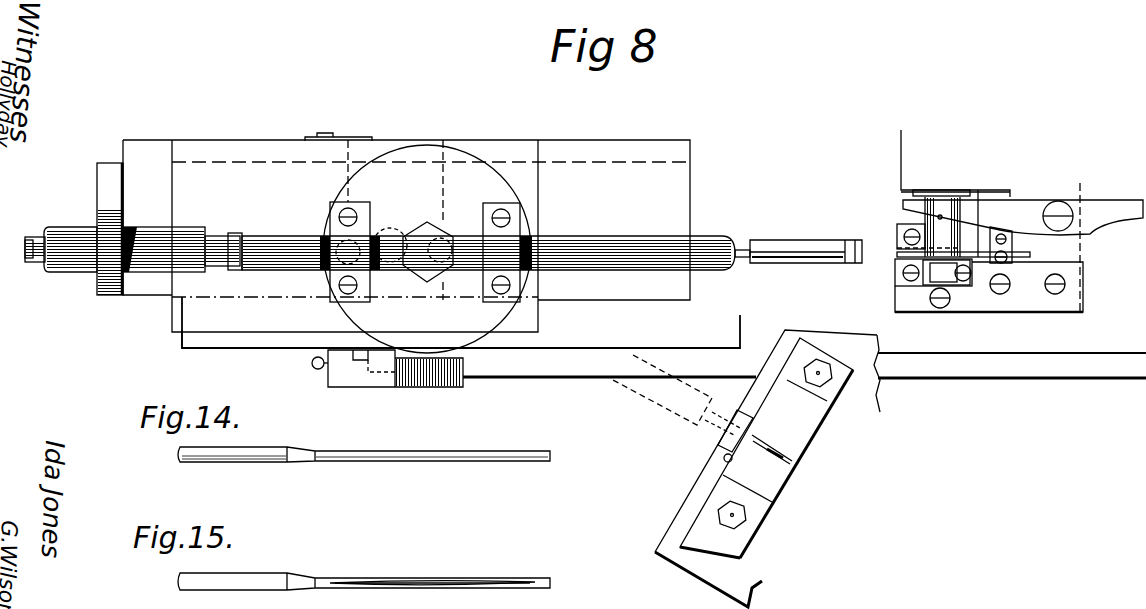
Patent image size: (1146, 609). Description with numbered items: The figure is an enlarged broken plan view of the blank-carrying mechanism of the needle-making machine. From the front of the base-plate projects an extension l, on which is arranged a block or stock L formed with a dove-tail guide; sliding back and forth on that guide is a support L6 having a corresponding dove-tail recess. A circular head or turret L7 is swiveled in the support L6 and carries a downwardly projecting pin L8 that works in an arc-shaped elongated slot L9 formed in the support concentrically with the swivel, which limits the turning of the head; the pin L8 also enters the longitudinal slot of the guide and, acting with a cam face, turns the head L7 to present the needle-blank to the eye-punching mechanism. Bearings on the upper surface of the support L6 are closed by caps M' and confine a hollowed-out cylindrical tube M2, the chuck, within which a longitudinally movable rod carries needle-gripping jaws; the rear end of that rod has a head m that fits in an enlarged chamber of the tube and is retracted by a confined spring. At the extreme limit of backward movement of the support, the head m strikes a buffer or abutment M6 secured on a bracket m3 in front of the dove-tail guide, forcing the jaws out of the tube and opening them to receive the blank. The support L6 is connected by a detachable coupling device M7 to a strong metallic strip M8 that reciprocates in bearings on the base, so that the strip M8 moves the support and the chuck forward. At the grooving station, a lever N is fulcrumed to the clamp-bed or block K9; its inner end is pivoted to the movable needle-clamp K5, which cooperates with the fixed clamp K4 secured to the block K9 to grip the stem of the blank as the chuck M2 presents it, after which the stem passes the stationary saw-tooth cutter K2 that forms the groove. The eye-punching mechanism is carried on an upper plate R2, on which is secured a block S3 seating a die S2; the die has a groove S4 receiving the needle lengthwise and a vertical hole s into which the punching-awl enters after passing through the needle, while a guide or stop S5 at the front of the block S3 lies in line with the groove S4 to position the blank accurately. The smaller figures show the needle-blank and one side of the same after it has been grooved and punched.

The block or stock L is at (406, 232).
The circular head or turret L7 is at (427, 249).
The support L6 is at (247, 308).
The extension l is at (282, 337).
The bracket m3 is at (105, 190).
The buffer or abutment M6 is at (216, 235).
The head m is at (238, 242).
The cylindrical tube M2 is at (626, 270).
The caps M' is at (428, 249).
The arc-shaped elongated slot L9 is at (411, 263).
The pin L8 is at (365, 226).
The detachable coupling device M7 is at (357, 377).
The metallic strip M8 is at (553, 372).
The lever N is at (1098, 210).
The movable needle-clamp K5 is at (898, 227).
The saw-tooth cutter K2 is at (896, 271).
The fixed needle-clamp K4 is at (968, 290).
The clamp-bed or block K9 is at (1050, 236).
The upper plate R2 is at (767, 468).
The groove S4 is at (784, 452).
The vertical hole s is at (786, 455).
The die S2 is at (747, 479).
The block S3 is at (721, 517).
The guide or stop S5 is at (727, 457).